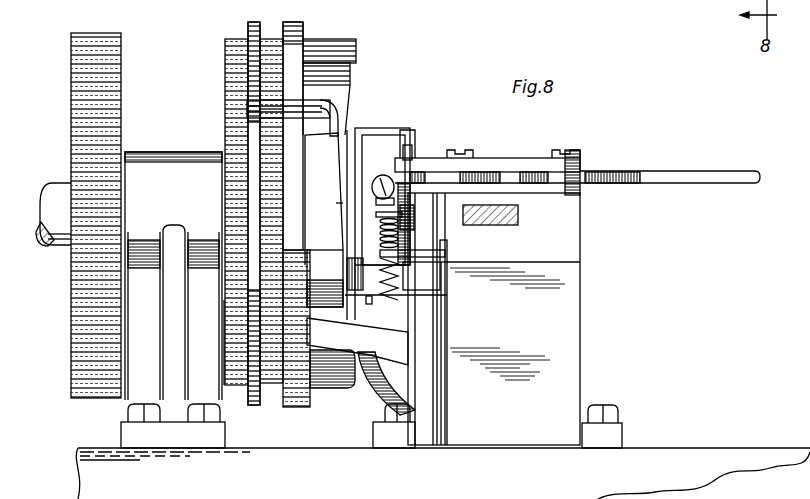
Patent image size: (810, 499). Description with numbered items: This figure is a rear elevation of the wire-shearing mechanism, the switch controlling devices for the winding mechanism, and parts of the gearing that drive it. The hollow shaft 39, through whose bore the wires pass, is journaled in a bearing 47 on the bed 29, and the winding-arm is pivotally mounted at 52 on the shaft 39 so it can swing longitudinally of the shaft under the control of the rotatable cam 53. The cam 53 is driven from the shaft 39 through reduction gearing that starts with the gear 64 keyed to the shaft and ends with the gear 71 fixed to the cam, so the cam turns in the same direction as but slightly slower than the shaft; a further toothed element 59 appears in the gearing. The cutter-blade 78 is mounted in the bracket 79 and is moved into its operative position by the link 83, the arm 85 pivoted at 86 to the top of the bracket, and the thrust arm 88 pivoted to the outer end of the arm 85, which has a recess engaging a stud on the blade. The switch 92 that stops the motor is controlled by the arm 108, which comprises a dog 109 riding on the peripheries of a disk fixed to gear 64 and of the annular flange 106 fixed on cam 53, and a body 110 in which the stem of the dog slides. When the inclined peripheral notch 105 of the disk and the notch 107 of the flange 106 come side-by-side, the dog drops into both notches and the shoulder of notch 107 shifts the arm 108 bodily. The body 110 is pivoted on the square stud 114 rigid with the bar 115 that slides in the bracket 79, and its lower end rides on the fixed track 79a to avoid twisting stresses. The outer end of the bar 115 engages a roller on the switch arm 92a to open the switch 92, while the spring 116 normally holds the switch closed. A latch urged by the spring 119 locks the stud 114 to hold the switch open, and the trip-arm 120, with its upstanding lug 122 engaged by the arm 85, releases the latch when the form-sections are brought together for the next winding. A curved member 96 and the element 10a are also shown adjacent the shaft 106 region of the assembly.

The bed 29 is at (492, 458).
The shaft 39 is at (48, 248).
The bearing 47 is at (155, 162).
The pivot 52 is at (384, 175).
The cam 53 is at (356, 58).
The gear 59 is at (71, 121).
The gear 64 is at (241, 388).
The gear 71 is at (287, 408).
The cutter-blade 78 is at (518, 214).
The bracket 79 is at (580, 238).
The fixed track 79a is at (312, 312).
The link 83 is at (698, 176).
The arm 85 is at (503, 165).
The pivot 86 is at (574, 156).
The thrust arm 88 is at (422, 172).
The switch 92 is at (513, 353).
The switch arm 92a is at (448, 248).
The arm 96 is at (370, 400).
The peripheral notch 105 is at (225, 321).
The annular flange 106 is at (296, 22).
The shaft 10a is at (254, 22).
The peripheral notch 107 is at (300, 291).
The arm 108 is at (330, 148).
The dog 109 is at (340, 106).
The body 110 is at (323, 204).
The stud 114 is at (371, 296).
The bar 115 is at (443, 318).
The spring 116 is at (382, 231).
The spring 119 is at (368, 296).
The trip-arm 120 is at (414, 218).
The upstanding lug 122 is at (414, 180).